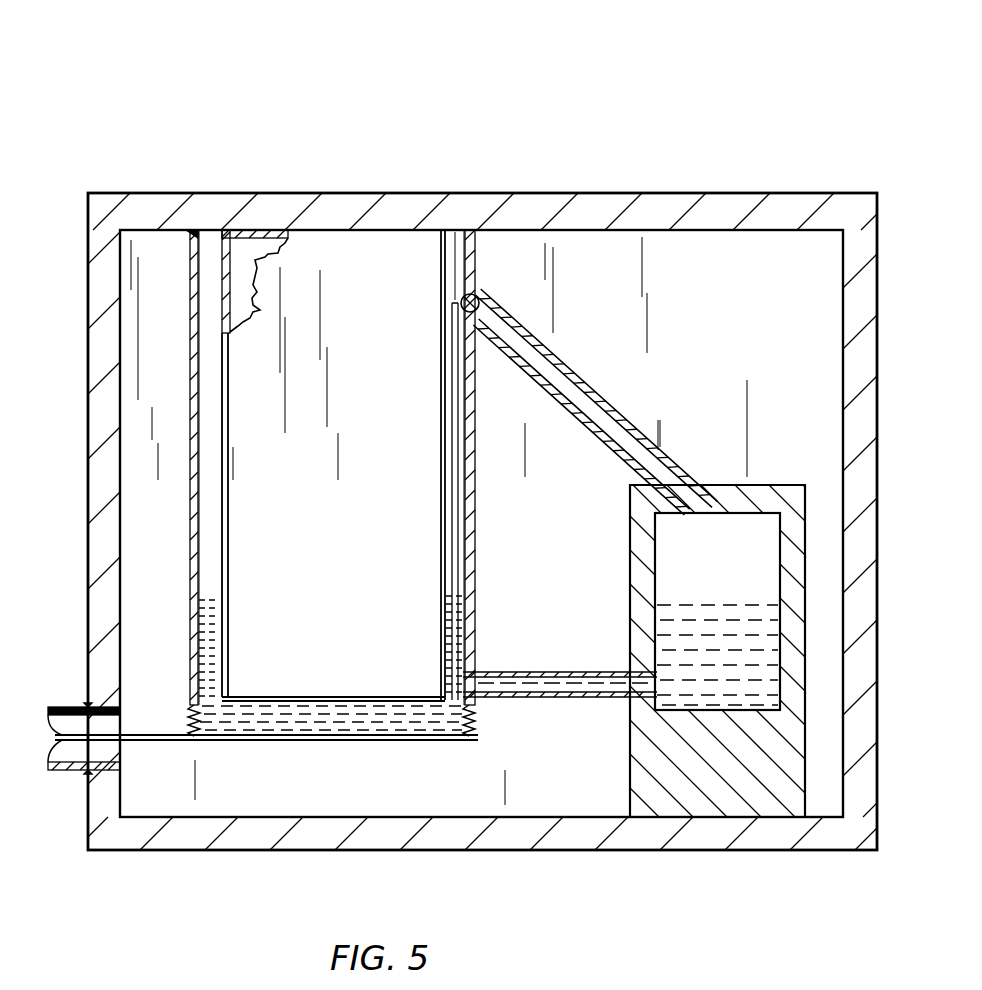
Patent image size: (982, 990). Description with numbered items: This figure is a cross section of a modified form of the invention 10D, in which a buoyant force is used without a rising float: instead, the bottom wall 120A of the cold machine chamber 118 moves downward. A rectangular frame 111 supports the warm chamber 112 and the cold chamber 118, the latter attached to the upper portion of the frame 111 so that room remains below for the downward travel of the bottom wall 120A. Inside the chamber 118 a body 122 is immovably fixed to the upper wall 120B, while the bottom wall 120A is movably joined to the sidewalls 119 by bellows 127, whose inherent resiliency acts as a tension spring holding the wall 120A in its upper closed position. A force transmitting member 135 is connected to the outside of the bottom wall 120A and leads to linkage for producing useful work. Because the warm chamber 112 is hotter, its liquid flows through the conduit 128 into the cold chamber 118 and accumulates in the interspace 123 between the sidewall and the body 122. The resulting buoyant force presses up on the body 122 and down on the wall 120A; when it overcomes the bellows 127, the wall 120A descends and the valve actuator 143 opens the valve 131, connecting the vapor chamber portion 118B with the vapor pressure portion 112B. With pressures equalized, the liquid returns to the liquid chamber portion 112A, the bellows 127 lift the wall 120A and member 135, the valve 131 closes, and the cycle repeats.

The modified form of the invention 10D is at (694, 82).
The frame 111 is at (322, 842).
The warm chamber 112 is at (783, 448).
The liquid chamber portion 112A is at (697, 626).
The vapor pressure portion 112B is at (717, 611).
The cold machine chamber 118 is at (463, 497).
The vapor chamber portion 118B is at (455, 243).
The sidewalls 119 is at (463, 448).
The bottom wall 120A is at (196, 742).
The upper wall 120B is at (298, 467).
The body 122 is at (300, 547).
The interspace 123 is at (218, 575).
The bellows 127 is at (190, 712).
The conduit 128 is at (538, 672).
The valve 131 is at (477, 296).
The force transmitting member 135 is at (308, 746).
The valve actuator 143 is at (458, 575).